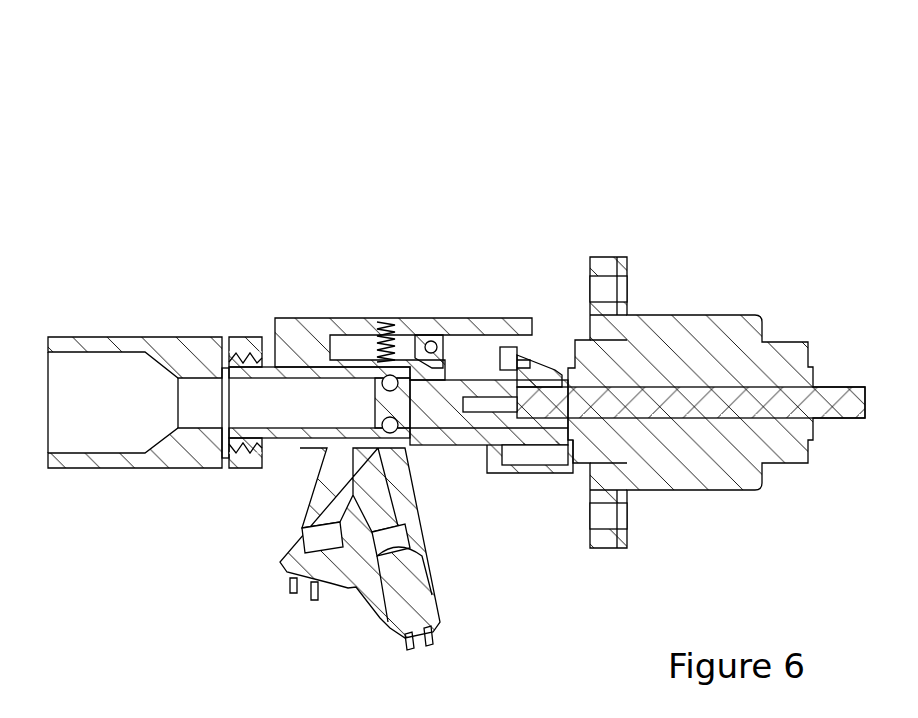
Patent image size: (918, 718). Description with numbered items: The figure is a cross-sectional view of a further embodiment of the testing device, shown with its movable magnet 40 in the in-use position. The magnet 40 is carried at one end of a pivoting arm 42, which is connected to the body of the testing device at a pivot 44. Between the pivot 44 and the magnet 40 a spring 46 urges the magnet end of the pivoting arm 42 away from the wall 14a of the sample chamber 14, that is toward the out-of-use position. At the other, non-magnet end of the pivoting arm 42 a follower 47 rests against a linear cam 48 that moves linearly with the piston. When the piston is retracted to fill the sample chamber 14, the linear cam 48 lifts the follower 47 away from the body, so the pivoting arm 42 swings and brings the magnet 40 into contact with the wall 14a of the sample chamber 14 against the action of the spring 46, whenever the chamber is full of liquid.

The sample chamber 14 is at (247, 414).
The wall of the sample chamber 14a is at (256, 370).
The movable magnet 40 is at (289, 364).
The pivoting arm 42 is at (346, 323).
The pivot 44 is at (433, 344).
The spring 46 is at (391, 346).
The follower 47 is at (525, 349).
The linear cam 48 is at (535, 387).